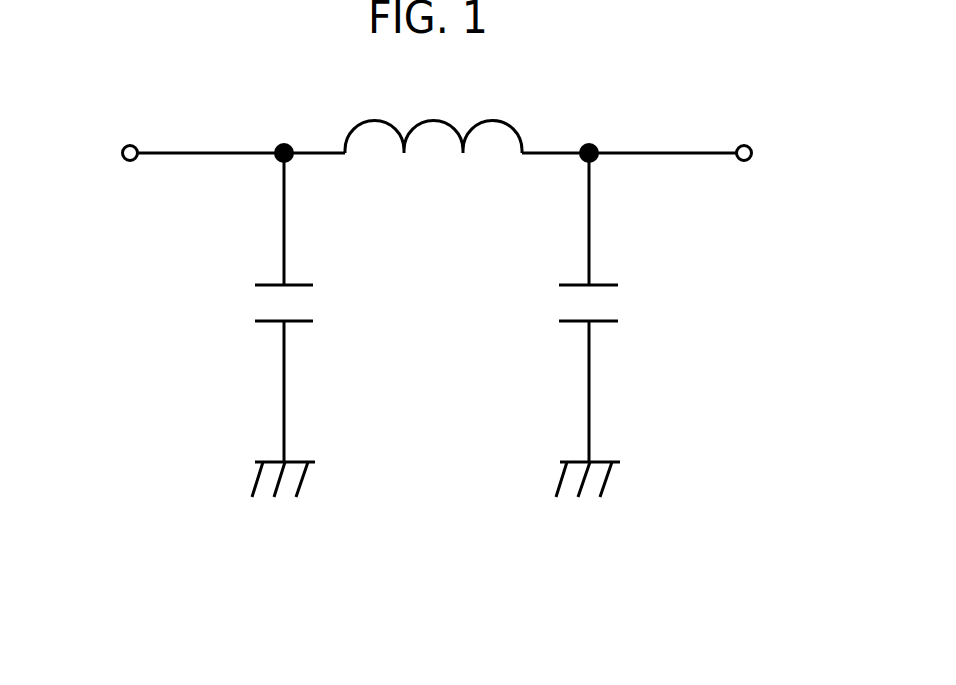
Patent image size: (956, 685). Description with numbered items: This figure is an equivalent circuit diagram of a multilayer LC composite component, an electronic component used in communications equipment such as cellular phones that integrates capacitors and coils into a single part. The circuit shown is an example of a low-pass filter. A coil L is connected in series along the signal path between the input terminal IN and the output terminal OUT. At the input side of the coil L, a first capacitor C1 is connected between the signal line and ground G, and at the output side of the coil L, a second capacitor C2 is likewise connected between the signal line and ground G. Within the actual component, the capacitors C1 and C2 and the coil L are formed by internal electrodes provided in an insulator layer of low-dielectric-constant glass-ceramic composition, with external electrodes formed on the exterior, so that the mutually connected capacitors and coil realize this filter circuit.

The input terminal IN is at (181, 151).
The output terminal OUT is at (709, 154).
The coil L is at (436, 172).
The capacitor C1 is at (309, 307).
The capacitor C2 is at (567, 307).
The ground G is at (436, 470).